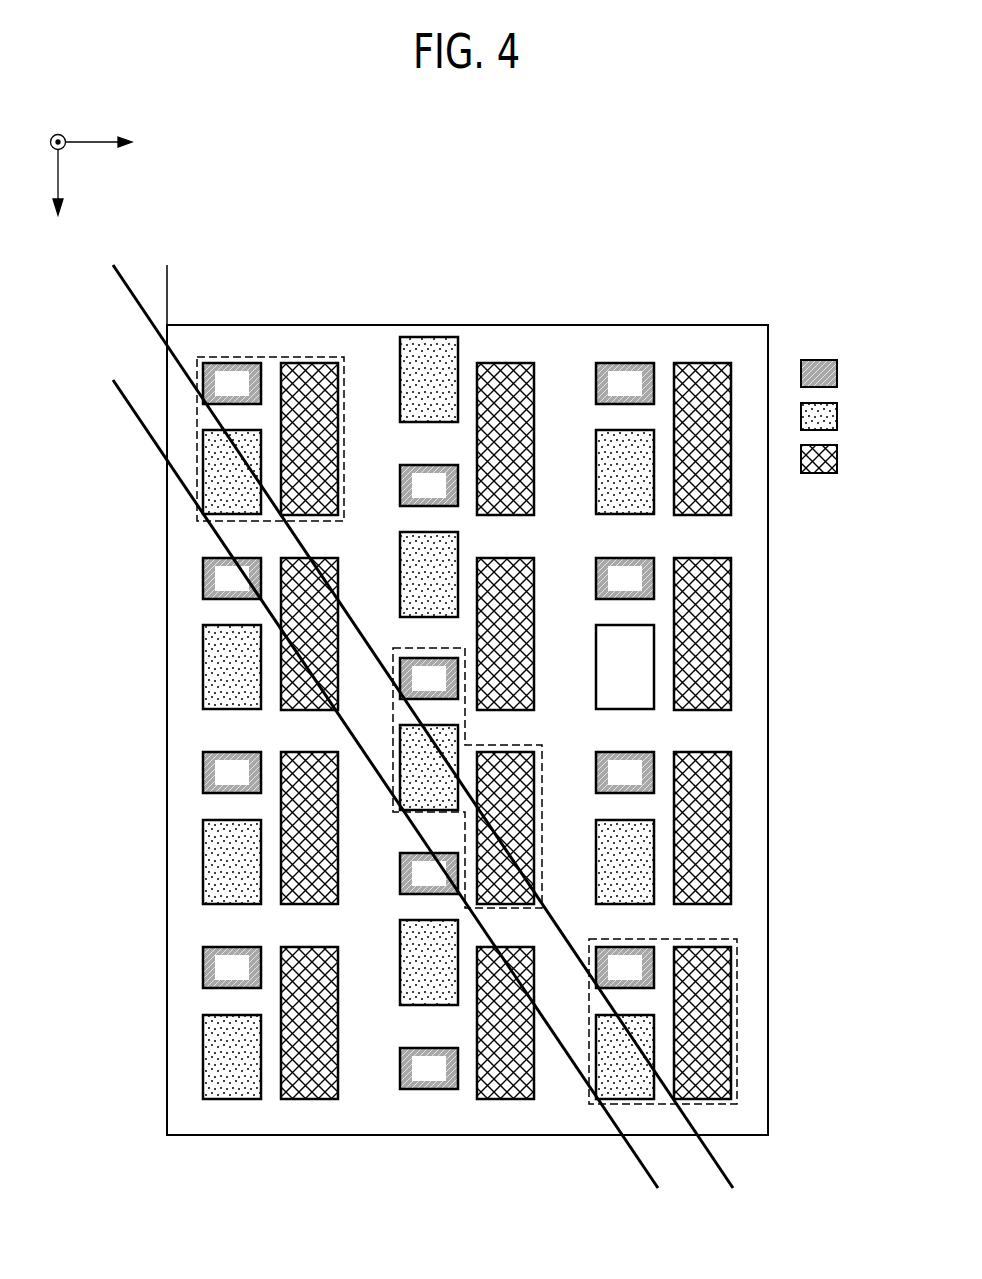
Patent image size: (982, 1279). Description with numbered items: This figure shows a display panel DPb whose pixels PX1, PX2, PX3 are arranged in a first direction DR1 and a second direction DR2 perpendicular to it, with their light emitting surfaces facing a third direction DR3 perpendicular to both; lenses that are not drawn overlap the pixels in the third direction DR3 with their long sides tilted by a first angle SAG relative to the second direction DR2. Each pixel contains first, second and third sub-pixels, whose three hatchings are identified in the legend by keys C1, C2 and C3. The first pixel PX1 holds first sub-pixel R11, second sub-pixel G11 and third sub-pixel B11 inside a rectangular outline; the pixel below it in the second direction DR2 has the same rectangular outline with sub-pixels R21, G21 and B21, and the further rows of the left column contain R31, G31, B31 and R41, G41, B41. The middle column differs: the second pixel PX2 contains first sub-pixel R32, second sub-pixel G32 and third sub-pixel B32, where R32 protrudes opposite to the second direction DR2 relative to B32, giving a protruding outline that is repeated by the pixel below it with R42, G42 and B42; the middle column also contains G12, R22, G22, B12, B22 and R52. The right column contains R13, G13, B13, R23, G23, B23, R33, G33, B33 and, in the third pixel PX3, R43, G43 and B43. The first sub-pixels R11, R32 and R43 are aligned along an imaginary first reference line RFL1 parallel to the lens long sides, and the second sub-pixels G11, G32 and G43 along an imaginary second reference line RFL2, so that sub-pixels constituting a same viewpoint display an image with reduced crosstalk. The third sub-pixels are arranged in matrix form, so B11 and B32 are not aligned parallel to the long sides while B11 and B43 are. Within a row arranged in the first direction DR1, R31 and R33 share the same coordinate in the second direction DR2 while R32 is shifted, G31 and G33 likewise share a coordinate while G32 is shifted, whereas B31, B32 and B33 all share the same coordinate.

The first direction DR1 is at (118, 144).
The second direction DR2 is at (59, 199).
The third direction DR3 is at (59, 129).
The display panel DPb is at (377, 325).
The first pixel PX1 is at (270, 357).
The second pixel PX2 is at (519, 745).
The third pixel PX3 is at (737, 992).
The first angle SAG is at (167, 298).
The first reference line RFL1 is at (167, 326).
The second reference line RFL2 is at (167, 441).
The first color (red) sub-pixel legend C1 is at (840, 374).
The second color (green) sub-pixel legend C2 is at (840, 417).
The third color (blue) sub-pixel legend C3 is at (840, 459).
The first sub-pixel R11 is at (232, 383).
The second sub-pixel G11 is at (232, 472).
The third sub-pixel B11 is at (309, 439).
The first sub-pixel R21 is at (232, 578).
The second sub-pixel G21 is at (232, 667).
The third sub-pixel B21 is at (309, 634).
The first sub-pixel R31 is at (232, 772).
The second sub-pixel G31 is at (232, 862).
The third sub-pixel B31 is at (309, 828).
The first sub-pixel R41 is at (232, 967).
The second sub-pixel G41 is at (232, 1057).
The third sub-pixel B41 is at (309, 1023).
The second sub-pixel G12 is at (429, 379).
The first sub-pixel R22 is at (429, 485).
The second sub-pixel G22 is at (429, 574).
The third sub-pixel B12 is at (505, 439).
The third sub-pixel B22 is at (505, 634).
The first sub-pixel R32 is at (429, 678).
The second sub-pixel G32 is at (429, 767).
The third sub-pixel B32 is at (505, 828).
The first sub-pixel R42 is at (429, 873).
The second sub-pixel G42 is at (429, 962).
The third sub-pixel B42 is at (505, 1023).
The first sub-pixel R52 is at (429, 1068).
The first sub-pixel R13 is at (625, 383).
The second sub-pixel G13 is at (625, 472).
The third sub-pixel B13 is at (702, 439).
The first sub-pixel R23 is at (625, 578).
The second sub-pixel G23 is at (625, 667).
The third sub-pixel B23 is at (702, 634).
The first sub-pixel R33 is at (625, 772).
The second sub-pixel G33 is at (625, 862).
The third sub-pixel B33 is at (702, 828).
The first sub-pixel R43 is at (625, 967).
The second sub-pixel G43 is at (625, 1057).
The third sub-pixel B43 is at (702, 1023).